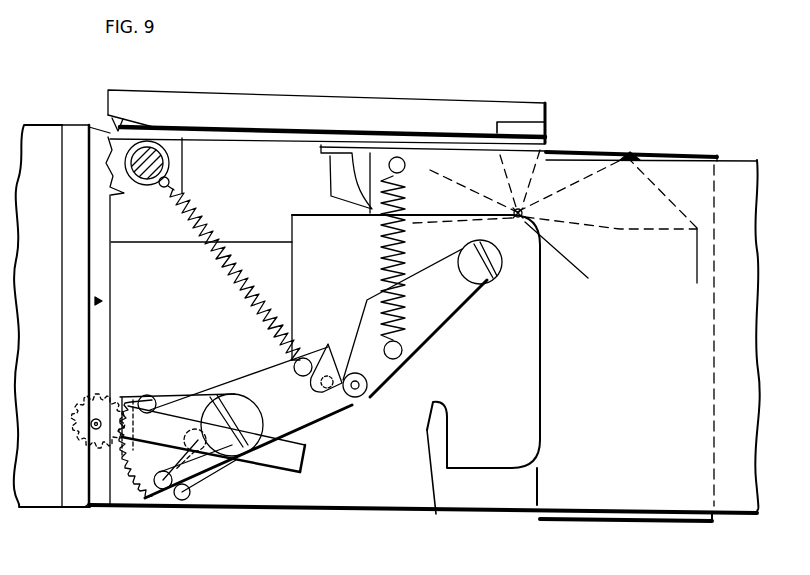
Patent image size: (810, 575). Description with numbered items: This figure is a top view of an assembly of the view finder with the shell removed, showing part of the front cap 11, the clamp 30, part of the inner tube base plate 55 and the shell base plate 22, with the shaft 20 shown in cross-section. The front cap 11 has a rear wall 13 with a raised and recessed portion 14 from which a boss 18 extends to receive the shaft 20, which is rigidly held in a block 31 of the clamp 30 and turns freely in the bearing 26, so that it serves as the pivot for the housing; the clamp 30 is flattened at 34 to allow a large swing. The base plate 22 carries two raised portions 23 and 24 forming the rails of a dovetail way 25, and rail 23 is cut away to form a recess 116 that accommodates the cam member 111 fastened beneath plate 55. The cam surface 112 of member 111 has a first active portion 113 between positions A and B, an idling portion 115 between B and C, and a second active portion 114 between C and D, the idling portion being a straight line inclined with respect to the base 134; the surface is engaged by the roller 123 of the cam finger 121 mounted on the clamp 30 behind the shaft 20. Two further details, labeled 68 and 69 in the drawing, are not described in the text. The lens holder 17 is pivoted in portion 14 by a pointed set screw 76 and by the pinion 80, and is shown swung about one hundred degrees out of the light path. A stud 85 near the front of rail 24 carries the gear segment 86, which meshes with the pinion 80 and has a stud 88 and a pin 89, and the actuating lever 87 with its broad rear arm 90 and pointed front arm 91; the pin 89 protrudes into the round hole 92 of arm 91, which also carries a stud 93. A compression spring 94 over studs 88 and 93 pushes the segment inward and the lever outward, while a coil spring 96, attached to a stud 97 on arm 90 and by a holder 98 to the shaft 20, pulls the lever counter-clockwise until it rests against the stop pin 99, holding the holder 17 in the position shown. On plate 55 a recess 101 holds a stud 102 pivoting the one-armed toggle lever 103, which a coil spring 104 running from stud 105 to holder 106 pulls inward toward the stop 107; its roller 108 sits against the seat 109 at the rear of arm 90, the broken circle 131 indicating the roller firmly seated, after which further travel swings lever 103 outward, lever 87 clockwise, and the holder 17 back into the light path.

The front cap 11 is at (28, 203).
The rear wall 13 is at (95, 300).
The raised and recessed portion 14 is at (100, 510).
The lens holder 17 is at (297, 473).
The boss 18 is at (118, 196).
The shaft 20 is at (122, 163).
The base plate 22 is at (540, 521).
The raised portion 23 is at (130, 227).
The raised portion 24 is at (392, 476).
The dovetail way 25 is at (162, 293).
The bearing 26 is at (157, 152).
The clamp 30 is at (252, 93).
The block 31 is at (110, 134).
The flattened portion 34 is at (107, 131).
The inner tube base plate 55 is at (733, 514).
The latch hook 68 is at (331, 196).
The partition 69 is at (435, 515).
The pointed set screw 76 is at (80, 437).
The pinion 80 is at (87, 403).
The stud 85 is at (256, 388).
The gear segment 86 is at (118, 508).
The actuating lever 87 is at (253, 392).
The stud 88 is at (146, 396).
The pin 89 is at (225, 480).
The rear arm 90 is at (312, 430).
The front arm 91 is at (272, 492).
The round hole 92 is at (245, 476).
The stud 93 is at (165, 488).
The compression spring 94 is at (175, 398).
The coil spring 96 is at (272, 303).
The stud 97 is at (310, 358).
The holder 98 is at (170, 182).
The stop pin 99 is at (185, 499).
The recess 101 is at (471, 422).
The stud 102 is at (500, 272).
The toggle lever 103 is at (463, 313).
The coil spring 104 is at (381, 233).
The stud 105 is at (400, 354).
The holder 106 is at (403, 171).
The stop 107 is at (381, 274).
The roller 108 is at (362, 400).
The seat 109 is at (326, 400).
The cam member 111 is at (607, 208).
The cam surface 112 is at (683, 207).
The active portion 113 is at (443, 182).
The active portion 114 is at (668, 196).
The idling portion 115 is at (580, 182).
The recess 116 is at (247, 183).
The cam finger 121 is at (518, 122).
The roller 123 is at (515, 213).
The broken circle 131 is at (335, 393).
The base 134 is at (677, 230).
The position A is at (323, 147).
The position B is at (563, 261).
The position C is at (628, 152).
The position D is at (559, 259).